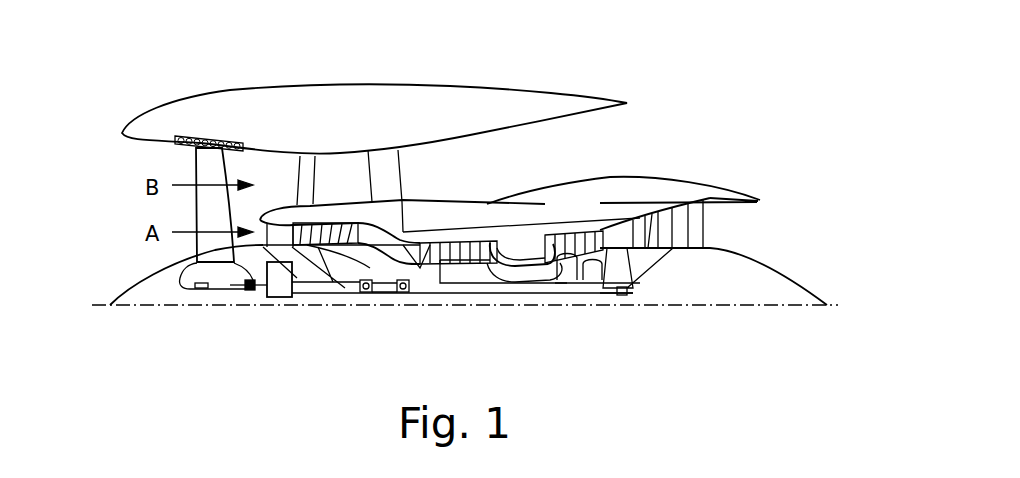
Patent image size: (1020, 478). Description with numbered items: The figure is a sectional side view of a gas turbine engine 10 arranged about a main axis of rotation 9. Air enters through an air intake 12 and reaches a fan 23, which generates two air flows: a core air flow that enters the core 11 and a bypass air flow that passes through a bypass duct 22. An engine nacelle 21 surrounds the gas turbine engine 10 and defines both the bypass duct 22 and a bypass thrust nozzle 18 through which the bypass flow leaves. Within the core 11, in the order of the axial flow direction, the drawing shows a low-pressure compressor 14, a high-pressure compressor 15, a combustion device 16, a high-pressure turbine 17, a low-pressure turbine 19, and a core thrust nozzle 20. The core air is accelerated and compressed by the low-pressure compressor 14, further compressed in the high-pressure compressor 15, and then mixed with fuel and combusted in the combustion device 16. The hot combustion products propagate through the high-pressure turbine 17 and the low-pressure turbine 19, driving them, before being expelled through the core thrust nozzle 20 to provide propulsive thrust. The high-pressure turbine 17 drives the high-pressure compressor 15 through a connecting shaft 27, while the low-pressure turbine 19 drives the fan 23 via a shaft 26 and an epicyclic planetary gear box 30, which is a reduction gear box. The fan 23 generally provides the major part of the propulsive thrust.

The main axis of rotation 9 is at (729, 306).
The gas turbine engine 10 is at (172, 100).
The core 11 is at (530, 222).
The air intake 12 is at (133, 162).
The low-pressure compressor 14 is at (333, 232).
The high-pressure compressor 15 is at (457, 244).
The combustion device 16 is at (512, 252).
The high-pressure turbine 17 is at (590, 235).
The bypass thrust nozzle 18 is at (712, 100).
The low-pressure turbine 19 is at (683, 240).
The core thrust nozzle 20 is at (762, 233).
The engine nacelle 21 is at (385, 100).
The bypass duct 22 is at (606, 138).
The fan 23 is at (203, 219).
The shaft 26 is at (428, 295).
The connecting shaft 27 is at (482, 294).
The epicyclic planetary gear box 30 is at (279, 298).